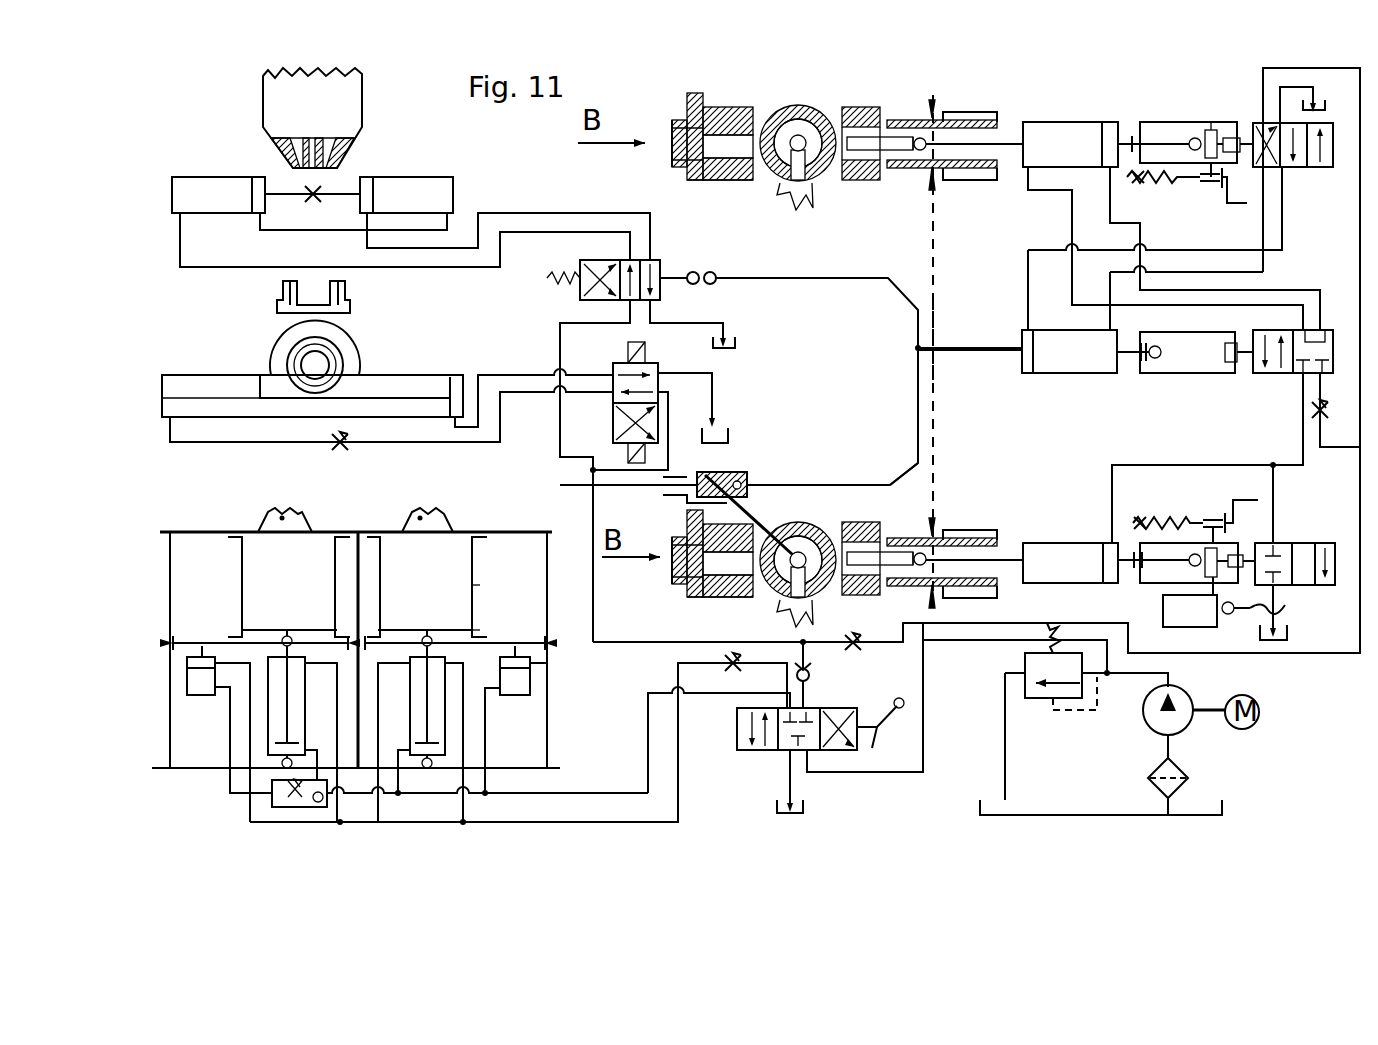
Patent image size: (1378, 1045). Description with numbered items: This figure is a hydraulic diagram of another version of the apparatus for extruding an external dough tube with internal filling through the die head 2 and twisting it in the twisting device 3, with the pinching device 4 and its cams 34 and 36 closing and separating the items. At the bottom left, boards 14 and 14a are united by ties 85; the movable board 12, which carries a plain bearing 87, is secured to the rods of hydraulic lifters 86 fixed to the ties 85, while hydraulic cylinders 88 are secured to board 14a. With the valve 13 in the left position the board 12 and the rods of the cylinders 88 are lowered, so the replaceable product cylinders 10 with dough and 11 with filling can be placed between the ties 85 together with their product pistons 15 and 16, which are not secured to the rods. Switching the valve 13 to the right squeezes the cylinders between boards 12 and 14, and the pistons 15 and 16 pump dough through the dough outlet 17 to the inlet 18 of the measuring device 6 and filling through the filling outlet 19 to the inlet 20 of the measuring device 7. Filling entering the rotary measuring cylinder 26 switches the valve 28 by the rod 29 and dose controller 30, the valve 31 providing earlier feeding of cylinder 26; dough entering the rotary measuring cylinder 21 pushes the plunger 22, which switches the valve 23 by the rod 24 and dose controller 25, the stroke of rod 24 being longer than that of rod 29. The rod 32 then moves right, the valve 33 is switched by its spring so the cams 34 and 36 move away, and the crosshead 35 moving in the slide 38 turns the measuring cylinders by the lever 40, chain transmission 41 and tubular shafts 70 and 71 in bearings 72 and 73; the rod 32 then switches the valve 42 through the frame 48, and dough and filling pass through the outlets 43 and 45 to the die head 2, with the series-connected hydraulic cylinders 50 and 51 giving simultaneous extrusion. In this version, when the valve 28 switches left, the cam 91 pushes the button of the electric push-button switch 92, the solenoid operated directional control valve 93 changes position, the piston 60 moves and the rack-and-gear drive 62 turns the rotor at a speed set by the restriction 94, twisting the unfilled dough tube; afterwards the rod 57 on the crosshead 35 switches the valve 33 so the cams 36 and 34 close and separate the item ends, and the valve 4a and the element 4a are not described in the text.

The die head 2 is at (273, 85).
The twisting device 3 is at (365, 360).
The pinching device 4 is at (397, 182).
The clamping cylinder 4a is at (440, 193).
The measuring device 6 is at (735, 108).
The measuring device 7 is at (712, 528).
The product cylinder 10 is at (245, 555).
The product cylinder 11 is at (460, 588).
The board 12 is at (495, 622).
The valve 13 is at (760, 750).
The board 14 is at (515, 532).
The board 14a is at (548, 740).
The product piston 15 is at (312, 630).
The product piston 16 is at (395, 630).
The dough outlet 17 is at (793, 195).
The inlet 18 is at (725, 182).
The filling outlet 19 is at (793, 605).
The inlet 20 is at (725, 598).
The rotary measuring cylinder 21 is at (740, 112).
The plunger 22 is at (870, 80).
The valve 23 is at (1323, 167).
The rod 24 is at (1003, 134).
The dose controller 25 is at (1167, 122).
The rotary measuring cylinder 26 is at (882, 505).
The valve 28 is at (1325, 543).
The rod 29 is at (1045, 543).
The dose controller 30 is at (1185, 530).
The valve 31 is at (290, 800).
The rod 32 is at (998, 348).
The valve 33 is at (598, 260).
The cam 34 is at (344, 138).
The crosshead 35 is at (735, 472).
The cam 36 is at (312, 194).
The slide 38 is at (770, 485).
The lever 40 is at (925, 490).
The chain transmission 41 is at (948, 375).
The valve 42 is at (1282, 373).
The outlet 43 is at (672, 130).
The outlet 45 is at (676, 558).
The frame 48 is at (1195, 373).
The hydraulic cylinder 50 is at (1072, 122).
The hydraulic cylinder 51 is at (1100, 520).
The rod 57 is at (745, 278).
The piston 60 is at (260, 398).
The rack-and-gear drive 62 is at (280, 400).
The tubular shaft 70 is at (915, 165).
The tubular shaft 71 is at (913, 592).
The bearing 72 is at (958, 80).
The bearing 73 is at (995, 538).
The tie 85 is at (175, 545).
The hydraulic lifter 86 is at (203, 685).
The plain bearing 87 is at (178, 655).
The hydraulic cylinder 88 is at (275, 720).
The cam 91 is at (1285, 605).
The electric push-button switch 92 is at (1190, 618).
The solenoid operated directional control valve 93 is at (613, 372).
The restriction 94 is at (352, 444).